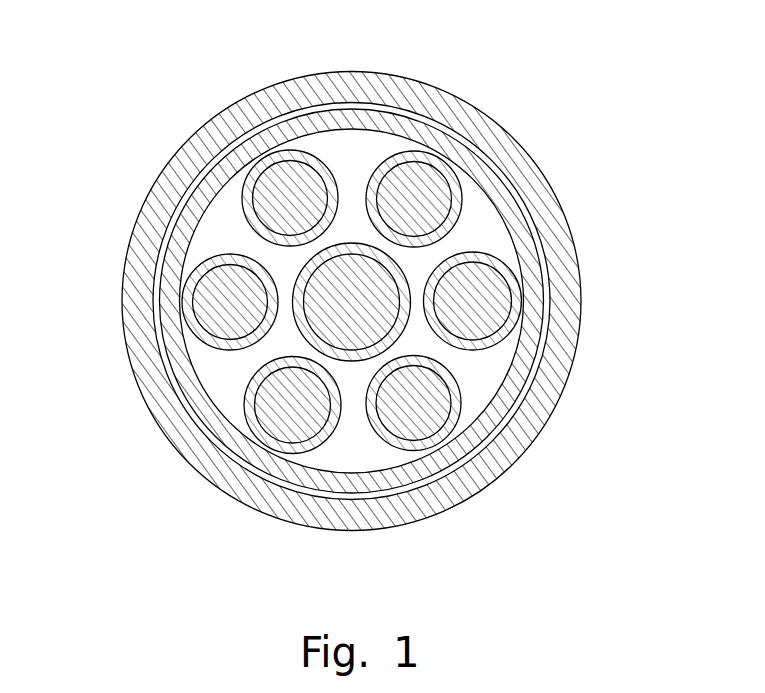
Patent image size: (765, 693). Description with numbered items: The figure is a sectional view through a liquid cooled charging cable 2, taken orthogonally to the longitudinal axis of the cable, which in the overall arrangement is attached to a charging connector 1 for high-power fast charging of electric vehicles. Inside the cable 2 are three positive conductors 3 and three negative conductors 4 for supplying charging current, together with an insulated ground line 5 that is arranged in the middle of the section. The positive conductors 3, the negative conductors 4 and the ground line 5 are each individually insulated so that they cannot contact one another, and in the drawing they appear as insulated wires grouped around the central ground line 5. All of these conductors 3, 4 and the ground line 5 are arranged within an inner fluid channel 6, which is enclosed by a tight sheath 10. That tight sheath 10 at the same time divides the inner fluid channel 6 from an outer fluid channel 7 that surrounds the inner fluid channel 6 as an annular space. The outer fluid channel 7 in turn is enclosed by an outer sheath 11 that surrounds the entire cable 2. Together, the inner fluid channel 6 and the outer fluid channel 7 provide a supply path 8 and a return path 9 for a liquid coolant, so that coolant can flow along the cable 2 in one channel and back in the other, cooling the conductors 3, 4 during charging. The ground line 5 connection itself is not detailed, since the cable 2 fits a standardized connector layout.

The charging connector 1 is at (429, 153).
The liquid cooled charging cable 2 is at (446, 71).
The positive conductors 3 is at (422, 197).
The negative conductors 4 is at (283, 190).
The insulated ground line 5 is at (352, 287).
The inner fluid channel 6 is at (288, 301).
The outer fluid channel 7 is at (351, 349).
The supply path 8 is at (352, 504).
The return path 9 is at (228, 195).
The tight sheath 10 is at (541, 287).
The outer sheath 11 is at (228, 100).